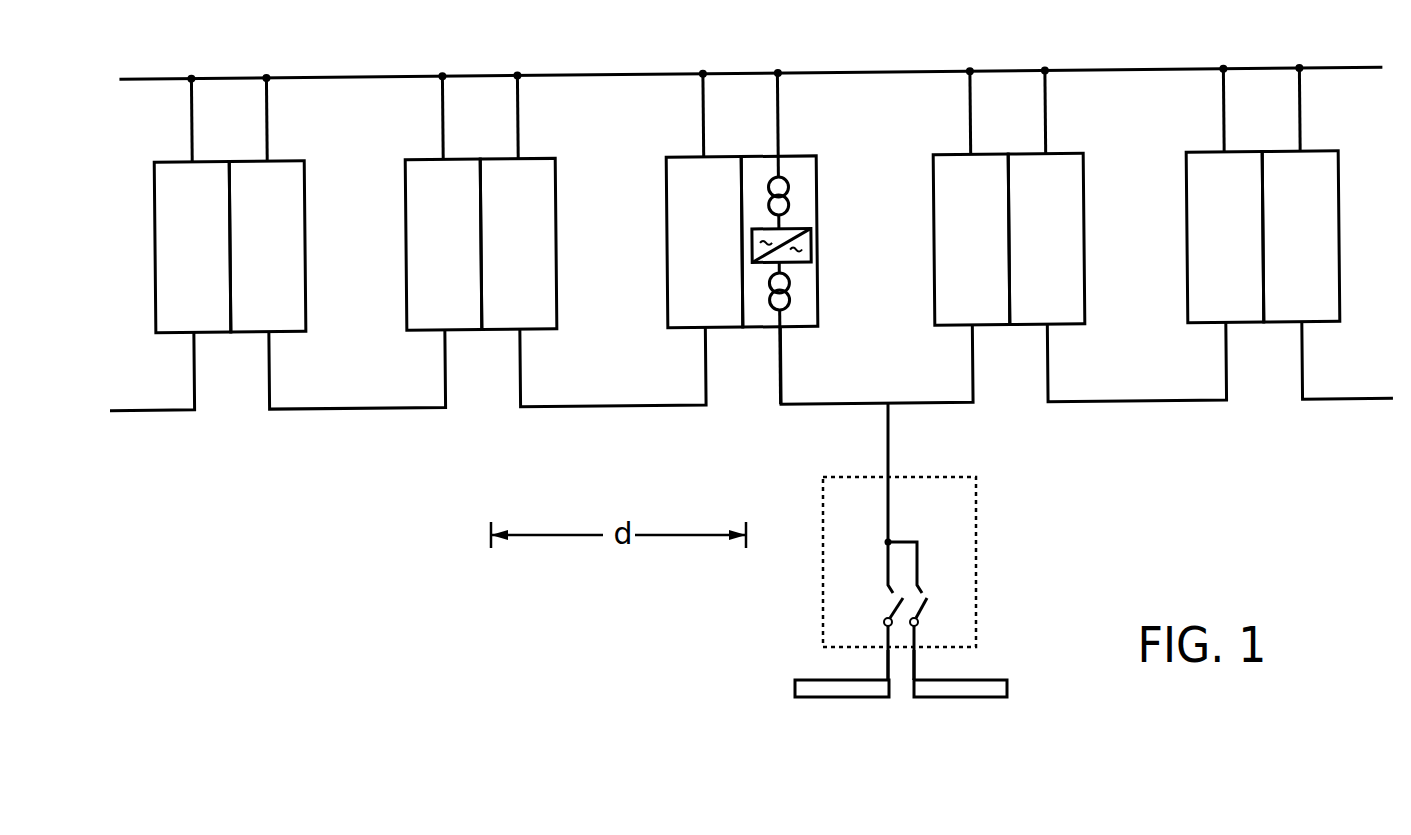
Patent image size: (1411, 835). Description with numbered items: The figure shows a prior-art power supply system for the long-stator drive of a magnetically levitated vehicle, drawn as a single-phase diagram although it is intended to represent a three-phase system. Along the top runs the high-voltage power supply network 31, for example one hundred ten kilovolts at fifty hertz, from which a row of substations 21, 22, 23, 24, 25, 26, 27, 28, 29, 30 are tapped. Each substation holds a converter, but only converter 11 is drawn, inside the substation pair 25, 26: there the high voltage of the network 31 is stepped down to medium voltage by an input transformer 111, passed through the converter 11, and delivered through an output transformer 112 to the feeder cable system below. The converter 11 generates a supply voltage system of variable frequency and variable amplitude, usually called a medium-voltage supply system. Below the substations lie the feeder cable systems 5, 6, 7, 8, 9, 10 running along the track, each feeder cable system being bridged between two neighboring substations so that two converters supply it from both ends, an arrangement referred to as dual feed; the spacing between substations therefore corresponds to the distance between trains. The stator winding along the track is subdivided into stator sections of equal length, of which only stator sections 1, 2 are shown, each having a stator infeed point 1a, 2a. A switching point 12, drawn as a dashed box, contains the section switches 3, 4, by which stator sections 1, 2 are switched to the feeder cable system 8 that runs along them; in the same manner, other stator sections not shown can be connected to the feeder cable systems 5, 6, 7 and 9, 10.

The power supply network 31 is at (854, 73).
The substation 21 is at (182, 198).
The substation 22 is at (279, 298).
The substation 23 is at (432, 200).
The substation 24 is at (530, 296).
The substation 25 is at (695, 200).
The substation 26 is at (800, 294).
The substation 27 is at (960, 199).
The substation 28 is at (1060, 298).
The substation 29 is at (1215, 198).
The substation 30 is at (1312, 297).
The input transformer 111 is at (779, 177).
The converter 11 is at (805, 244).
The output transformer 112 is at (787, 305).
The feeder cable system 5 is at (135, 404).
The feeder cable system 6 is at (351, 404).
The feeder cable system 7 is at (598, 404).
The feeder cable system 8 is at (800, 404).
The feeder cable system 9 is at (1125, 404).
The feeder cable system 10 is at (1355, 404).
The switching point 12 is at (976, 525).
The section switch 3 is at (895, 605).
The section switch 4 is at (930, 605).
The stator infeed point 1a is at (885, 678).
The stator infeed point 2a is at (918, 678).
The stator section 1 is at (847, 697).
The stator section 2 is at (965, 697).